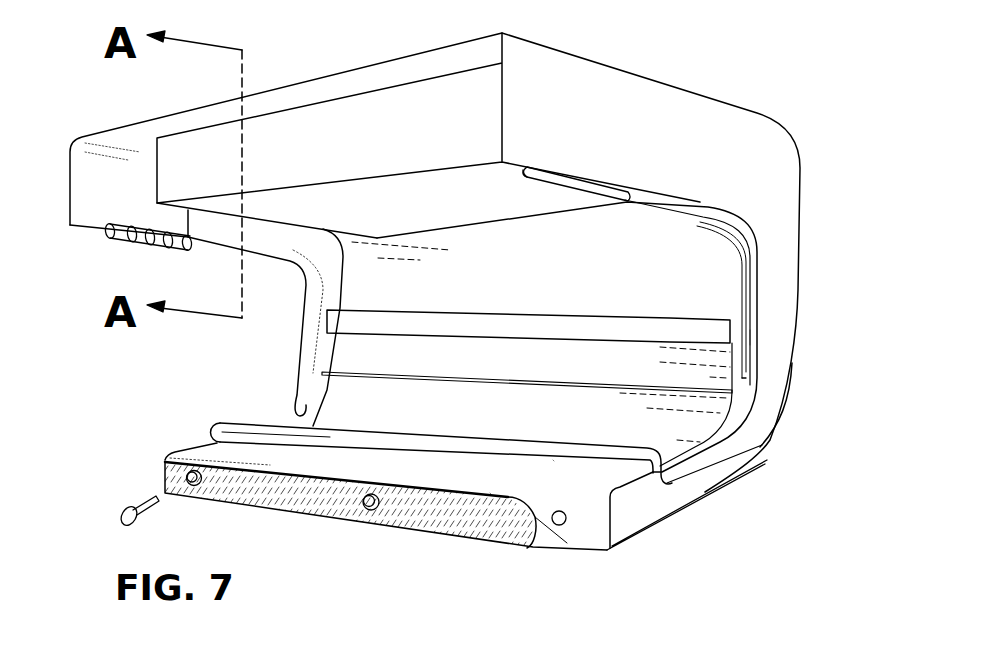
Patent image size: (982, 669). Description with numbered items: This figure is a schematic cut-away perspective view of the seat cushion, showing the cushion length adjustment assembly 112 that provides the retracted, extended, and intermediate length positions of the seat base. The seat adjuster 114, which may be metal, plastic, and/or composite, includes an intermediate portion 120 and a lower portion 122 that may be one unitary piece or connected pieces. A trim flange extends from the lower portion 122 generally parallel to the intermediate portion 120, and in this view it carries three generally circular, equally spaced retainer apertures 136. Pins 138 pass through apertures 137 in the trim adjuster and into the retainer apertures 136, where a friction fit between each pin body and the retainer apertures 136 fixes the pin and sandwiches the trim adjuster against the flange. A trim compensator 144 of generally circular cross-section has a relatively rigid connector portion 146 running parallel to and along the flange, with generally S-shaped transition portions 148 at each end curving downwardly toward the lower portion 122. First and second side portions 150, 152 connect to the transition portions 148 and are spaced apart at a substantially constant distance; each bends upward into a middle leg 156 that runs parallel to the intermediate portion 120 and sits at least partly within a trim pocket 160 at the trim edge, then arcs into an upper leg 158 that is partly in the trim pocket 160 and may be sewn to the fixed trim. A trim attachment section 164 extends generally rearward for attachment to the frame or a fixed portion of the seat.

The cushion length adjustment assembly 112 is at (822, 162).
The seat adjuster 114 is at (740, 300).
The intermediate portion 120 is at (768, 338).
The lower portion 122 is at (645, 491).
The retainer apertures 136 is at (372, 509).
The apertures 137 is at (562, 524).
The pins 138 is at (130, 505).
The trim compensator 144 is at (567, 457).
The connector portion 146 is at (503, 457).
The transition portions 148 is at (675, 463).
The first side portion 150 is at (743, 377).
The second side portion 152 is at (290, 410).
The middle leg 156 is at (752, 358).
The upper leg 158 is at (708, 205).
The trim pocket 160 is at (748, 448).
The trim attachment section 164 is at (113, 240).